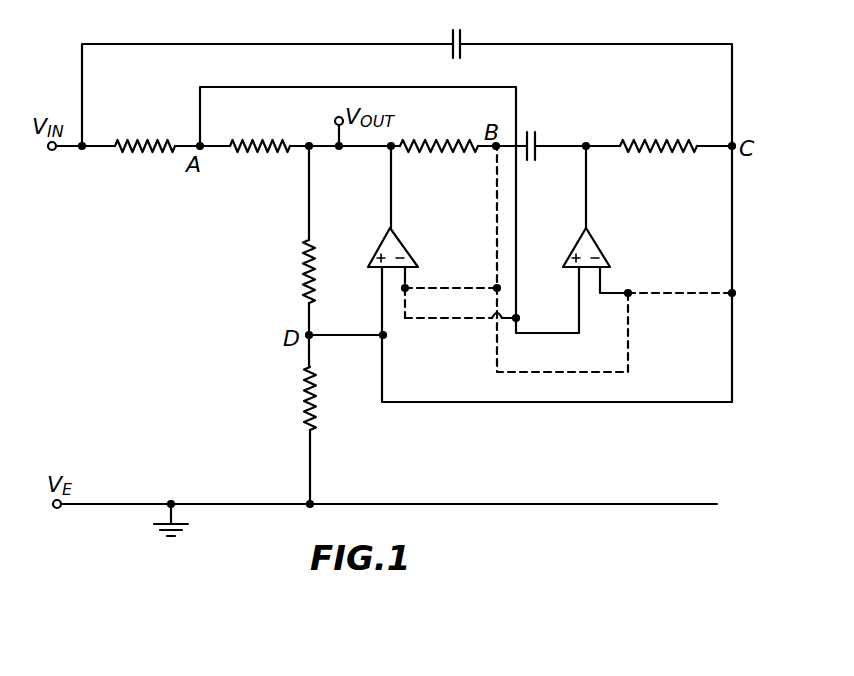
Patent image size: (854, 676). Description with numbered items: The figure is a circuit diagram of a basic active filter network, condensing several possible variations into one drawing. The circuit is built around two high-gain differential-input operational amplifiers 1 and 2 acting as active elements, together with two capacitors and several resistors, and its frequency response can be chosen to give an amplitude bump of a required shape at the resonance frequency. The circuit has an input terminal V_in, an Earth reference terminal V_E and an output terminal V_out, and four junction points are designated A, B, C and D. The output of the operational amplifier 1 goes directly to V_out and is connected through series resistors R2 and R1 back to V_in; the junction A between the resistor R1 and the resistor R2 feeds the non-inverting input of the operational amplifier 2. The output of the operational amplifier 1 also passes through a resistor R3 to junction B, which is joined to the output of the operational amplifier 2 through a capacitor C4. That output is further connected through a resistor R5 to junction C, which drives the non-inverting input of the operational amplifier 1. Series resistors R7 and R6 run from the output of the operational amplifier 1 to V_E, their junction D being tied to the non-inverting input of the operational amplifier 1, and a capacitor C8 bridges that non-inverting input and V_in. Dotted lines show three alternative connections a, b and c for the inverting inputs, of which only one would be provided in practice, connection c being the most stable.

The operational amplifier 1 is at (408, 246).
The operational amplifier 2 is at (604, 246).
The resistor R1 is at (145, 164).
The resistor R2 is at (260, 164).
The resistor R3 is at (439, 164).
The resistor R5 is at (658, 164).
The resistor R6 is at (289, 419).
The resistor R7 is at (288, 240).
The capacitor C4 is at (546, 136).
The capacitor C8 is at (405, 206).